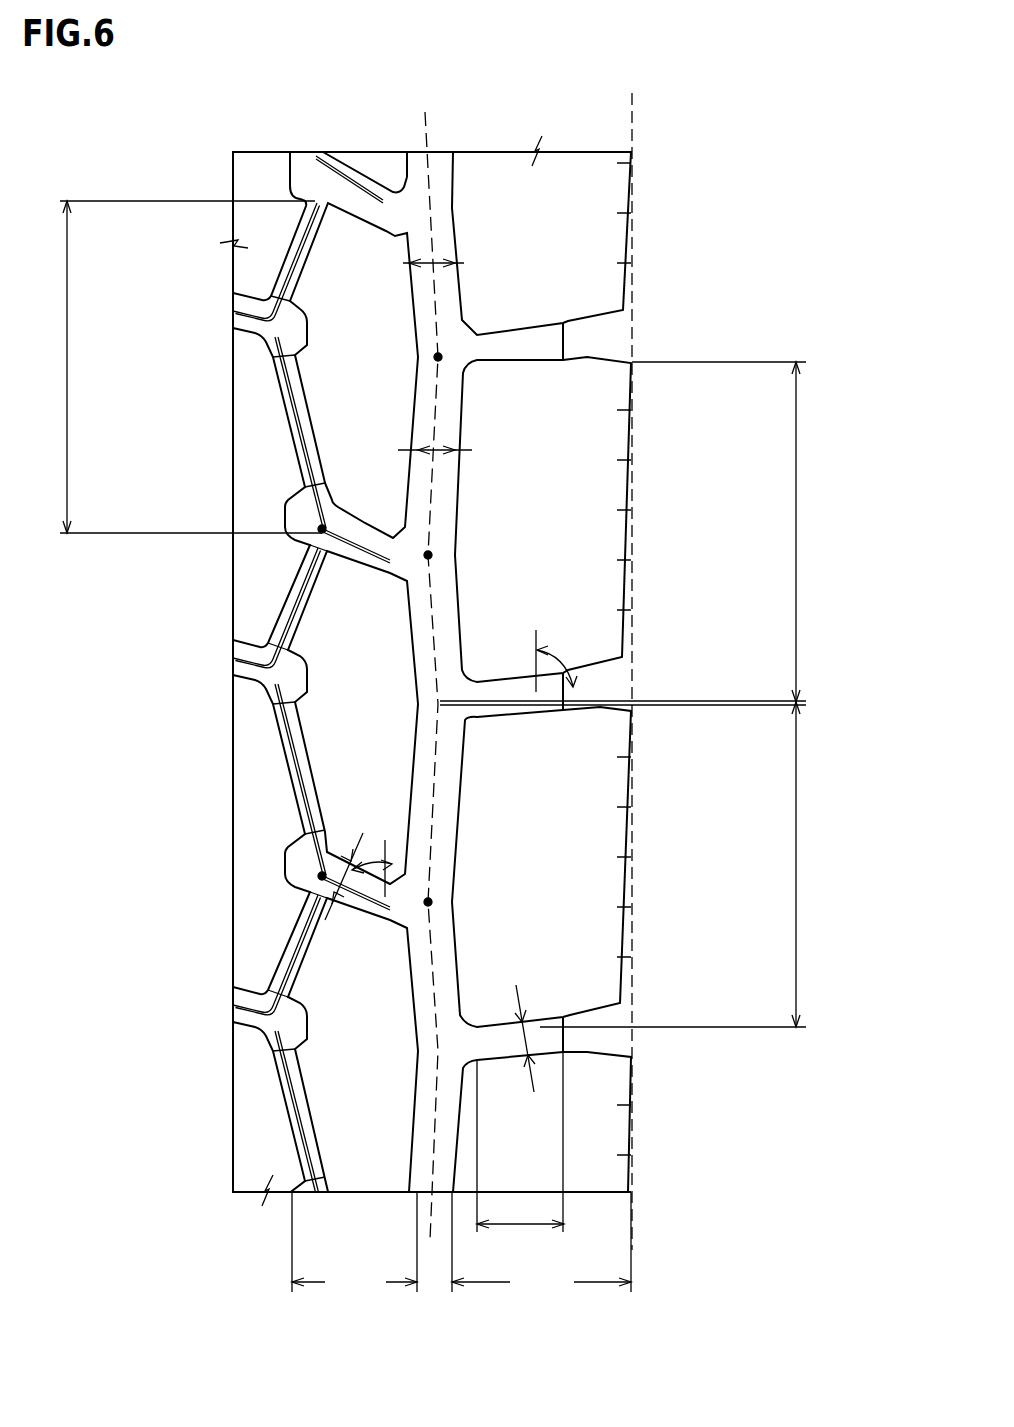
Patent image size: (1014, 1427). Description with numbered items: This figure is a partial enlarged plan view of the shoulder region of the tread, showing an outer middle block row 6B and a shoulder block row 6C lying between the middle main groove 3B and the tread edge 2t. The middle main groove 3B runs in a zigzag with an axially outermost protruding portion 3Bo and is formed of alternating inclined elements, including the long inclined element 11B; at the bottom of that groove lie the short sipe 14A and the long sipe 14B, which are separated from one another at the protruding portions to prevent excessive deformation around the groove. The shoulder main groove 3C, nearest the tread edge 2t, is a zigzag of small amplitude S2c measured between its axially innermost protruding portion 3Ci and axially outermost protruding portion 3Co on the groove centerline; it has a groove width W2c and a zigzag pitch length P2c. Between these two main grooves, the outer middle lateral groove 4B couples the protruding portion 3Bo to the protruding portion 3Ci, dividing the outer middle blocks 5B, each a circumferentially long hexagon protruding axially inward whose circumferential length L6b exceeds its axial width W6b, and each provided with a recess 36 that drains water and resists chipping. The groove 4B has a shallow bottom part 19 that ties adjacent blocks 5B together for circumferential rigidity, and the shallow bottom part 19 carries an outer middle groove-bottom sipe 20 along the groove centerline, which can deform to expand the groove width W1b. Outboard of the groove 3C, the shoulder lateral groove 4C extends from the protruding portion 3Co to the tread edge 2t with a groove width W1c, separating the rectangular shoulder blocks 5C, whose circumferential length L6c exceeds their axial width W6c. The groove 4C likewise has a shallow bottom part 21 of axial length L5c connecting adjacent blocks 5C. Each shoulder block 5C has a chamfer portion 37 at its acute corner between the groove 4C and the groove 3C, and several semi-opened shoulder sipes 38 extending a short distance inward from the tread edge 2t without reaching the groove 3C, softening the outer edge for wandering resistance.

The tread edge 2t is at (632, 137).
The middle main groove 3B is at (296, 228).
The shoulder main groove 3C is at (416, 168).
The outer middle block 5B is at (387, 372).
The shoulder block 5C is at (562, 264).
The shoulder lateral groove 4C is at (614, 337).
The outer middle lateral groove 4B is at (405, 914).
The long sipe 14B is at (287, 387).
The short sipe 14A is at (300, 605).
The long inclined element 11B is at (286, 427).
The recess 36 is at (258, 683).
The chamfer portion 37 is at (415, 1075).
The semi-opened shoulder sipe 38 is at (620, 1150).
The axially outermost protruding portion of the middle main groove 3Bo is at (322, 529).
The axially outermost protruding portion of the shoulder main groove 3Co is at (438, 357).
The axially innermost protruding portion of the shoulder main groove 3Ci is at (428, 555).
The shallow bottom part 19 is at (372, 572).
The outer middle groove-bottom sipe 20 is at (365, 552).
The shallow bottom part 21 is at (553, 1035).
The outer middle block row 6B is at (372, 1152).
The shoulder block row 6C is at (588, 1152).
The circumferential length of the outer middle block L6b is at (182, 367).
The circumferential length of the shoulder block L6c is at (680, 864).
The zigzag pitch length of the shoulder main groove P2c is at (630, 533).
The axial width of the outer middle block W6b is at (354, 1246).
The axial width of the shoulder block W6c is at (541, 1246).
The axial length of the shallow bottom part L5c is at (520, 1158).
The groove width of the shoulder main groove W2c is at (435, 262).
The zigzag amplitude of the shoulder main groove S2c is at (432, 456).
The groove width of the outer middle lateral groove W1b is at (337, 884).
The groove width of the shoulder lateral groove W1c is at (530, 1062).